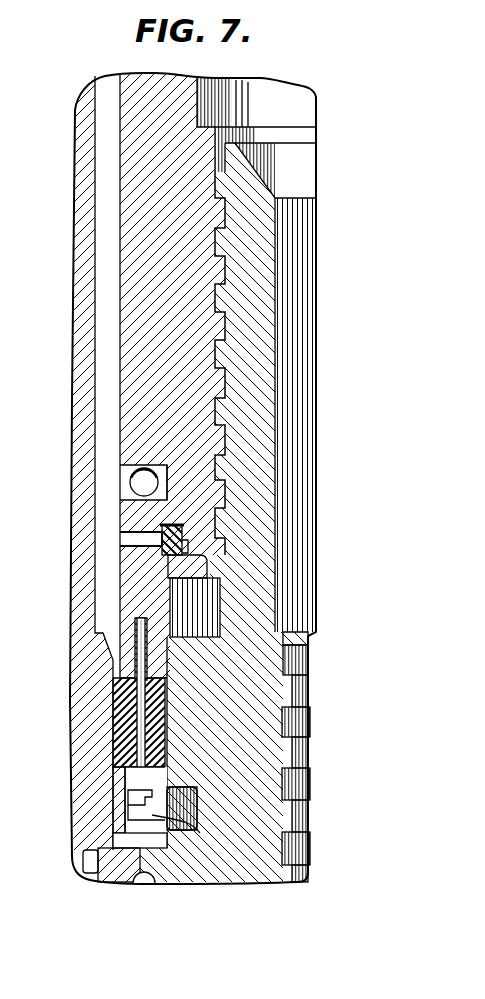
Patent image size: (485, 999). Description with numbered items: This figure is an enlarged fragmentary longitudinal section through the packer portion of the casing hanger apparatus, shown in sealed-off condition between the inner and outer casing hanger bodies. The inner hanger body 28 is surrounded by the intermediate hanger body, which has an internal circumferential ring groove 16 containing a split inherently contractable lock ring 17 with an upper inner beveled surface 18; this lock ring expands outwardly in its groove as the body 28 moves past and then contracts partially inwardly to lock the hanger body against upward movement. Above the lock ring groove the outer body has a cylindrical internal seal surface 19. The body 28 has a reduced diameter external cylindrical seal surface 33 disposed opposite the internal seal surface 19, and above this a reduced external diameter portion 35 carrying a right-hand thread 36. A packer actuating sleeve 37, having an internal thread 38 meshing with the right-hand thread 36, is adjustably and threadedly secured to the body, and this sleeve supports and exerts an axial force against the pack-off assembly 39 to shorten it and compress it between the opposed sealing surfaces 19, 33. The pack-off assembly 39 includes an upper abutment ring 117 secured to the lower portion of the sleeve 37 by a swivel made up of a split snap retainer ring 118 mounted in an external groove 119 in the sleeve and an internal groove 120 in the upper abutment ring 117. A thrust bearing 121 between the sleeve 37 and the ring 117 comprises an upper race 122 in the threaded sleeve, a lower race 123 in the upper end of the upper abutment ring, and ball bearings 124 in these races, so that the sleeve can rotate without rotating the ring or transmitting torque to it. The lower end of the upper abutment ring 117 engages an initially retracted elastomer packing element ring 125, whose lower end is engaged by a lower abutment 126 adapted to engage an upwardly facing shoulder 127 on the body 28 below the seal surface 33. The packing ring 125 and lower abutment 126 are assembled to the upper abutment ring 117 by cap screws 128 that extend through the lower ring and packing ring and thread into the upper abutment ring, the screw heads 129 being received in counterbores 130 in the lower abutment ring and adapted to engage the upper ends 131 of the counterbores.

The internal circumferential ring groove 16 is at (84, 870).
The split inherently contractable lock ring 17 is at (110, 868).
The upper inner beveled surface 18 is at (146, 870).
The internal seal surface 19 is at (112, 774).
The body 28 is at (250, 748).
The external cylindrical seal surface 33 is at (165, 730).
The reduced external diameter portion 35 is at (252, 348).
The right-hand thread 36 is at (244, 268).
The packer actuating sleeve 37 is at (133, 287).
The internal thread 38 is at (215, 357).
The pack-off assembly 39 is at (100, 715).
The upper abutment ring 117 is at (133, 596).
The split snap retainer ring 118 is at (184, 528).
The external groove 119 is at (188, 551).
The internal groove 120 is at (160, 540).
The thrust bearing 121 is at (120, 481).
The upper race 122 is at (128, 474).
The lower race 123 is at (130, 492).
The ball bearings 124 is at (152, 470).
The packing element ring 125 is at (117, 748).
The lower abutment 126 is at (130, 800).
The upwardly facing shoulder 127 is at (110, 840).
The cap screws 128 is at (138, 688).
The heads 129 is at (143, 815).
The counterbores 130 is at (152, 815).
The upper ends 131 is at (133, 802).